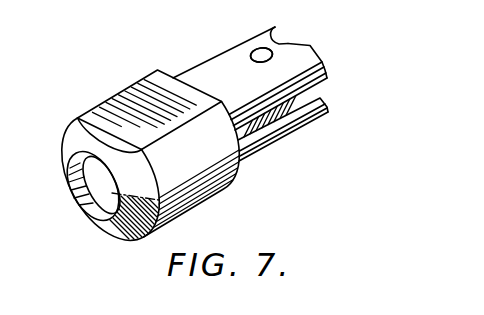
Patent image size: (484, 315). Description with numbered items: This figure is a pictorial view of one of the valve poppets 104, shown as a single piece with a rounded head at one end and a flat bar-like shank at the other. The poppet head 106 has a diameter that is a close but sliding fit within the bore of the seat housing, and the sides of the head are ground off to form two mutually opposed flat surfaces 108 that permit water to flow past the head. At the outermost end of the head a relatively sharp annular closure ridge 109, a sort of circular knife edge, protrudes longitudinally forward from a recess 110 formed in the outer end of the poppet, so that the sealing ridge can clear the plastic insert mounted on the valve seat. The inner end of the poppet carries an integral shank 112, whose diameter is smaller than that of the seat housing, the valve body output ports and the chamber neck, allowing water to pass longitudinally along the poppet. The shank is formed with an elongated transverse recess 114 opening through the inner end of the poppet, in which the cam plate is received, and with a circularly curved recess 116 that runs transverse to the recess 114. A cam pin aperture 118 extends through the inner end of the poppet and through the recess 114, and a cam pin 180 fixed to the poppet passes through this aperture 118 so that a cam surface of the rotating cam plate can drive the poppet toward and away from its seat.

The valve poppet 104 is at (124, 64).
The poppet head 106 is at (200, 193).
The flat surfaces 108 is at (117, 100).
The annular closure ridge 109 is at (84, 196).
The recess 110 is at (72, 179).
The shank 112 is at (254, 94).
The transverse recess 114 is at (308, 102).
The circularly curved recess 116 is at (287, 42).
The cam pin aperture 118 is at (260, 50).
The cam pin 180 is at (257, 51).